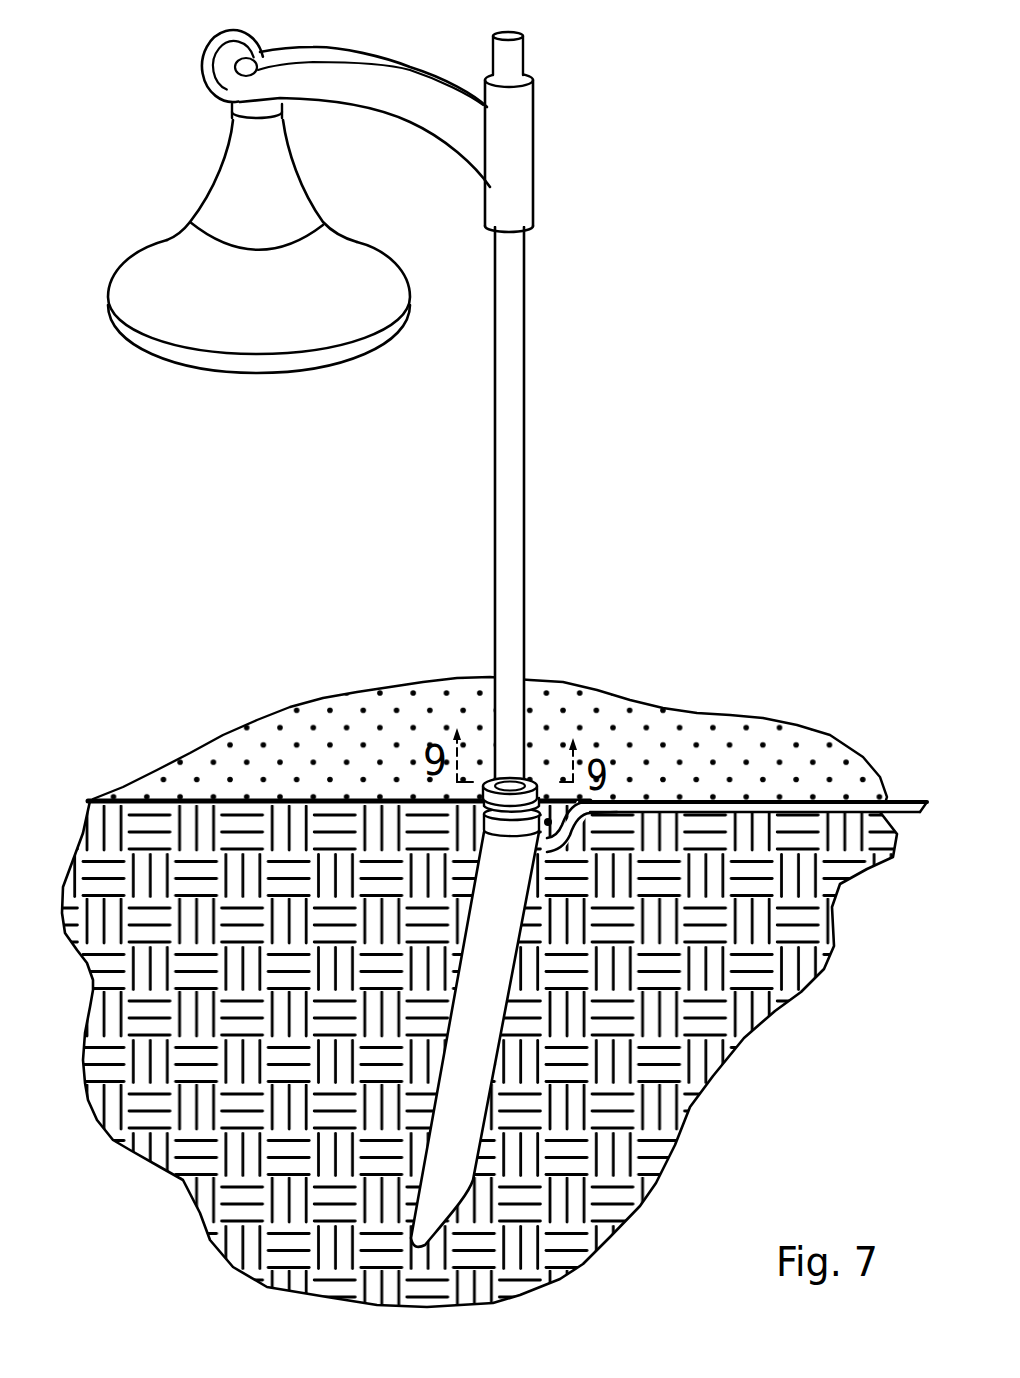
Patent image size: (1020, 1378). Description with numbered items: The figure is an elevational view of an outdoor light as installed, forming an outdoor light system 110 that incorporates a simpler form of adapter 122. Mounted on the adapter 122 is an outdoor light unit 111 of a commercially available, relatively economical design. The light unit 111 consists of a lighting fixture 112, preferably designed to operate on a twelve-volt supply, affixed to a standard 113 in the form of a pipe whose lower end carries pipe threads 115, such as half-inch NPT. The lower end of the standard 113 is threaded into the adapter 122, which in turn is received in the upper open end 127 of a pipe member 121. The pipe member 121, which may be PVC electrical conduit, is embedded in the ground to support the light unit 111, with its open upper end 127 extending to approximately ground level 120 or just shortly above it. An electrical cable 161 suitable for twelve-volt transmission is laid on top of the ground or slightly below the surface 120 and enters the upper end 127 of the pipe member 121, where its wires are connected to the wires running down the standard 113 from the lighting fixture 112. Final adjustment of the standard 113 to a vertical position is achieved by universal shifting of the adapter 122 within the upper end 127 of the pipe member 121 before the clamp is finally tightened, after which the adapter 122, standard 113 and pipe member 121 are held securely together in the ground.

The outdoor light system 110 is at (533, 927).
The outdoor light unit 111 is at (427, 408).
The lighting fixture 112 is at (150, 247).
The standard 113 is at (510, 523).
The pipe threads 115 is at (538, 781).
The ground level 120 is at (766, 751).
The pipe member 121 is at (463, 1112).
The adapter 122 is at (655, 722).
The upper open end 127 is at (500, 870).
The electrical cable 161 is at (833, 805).